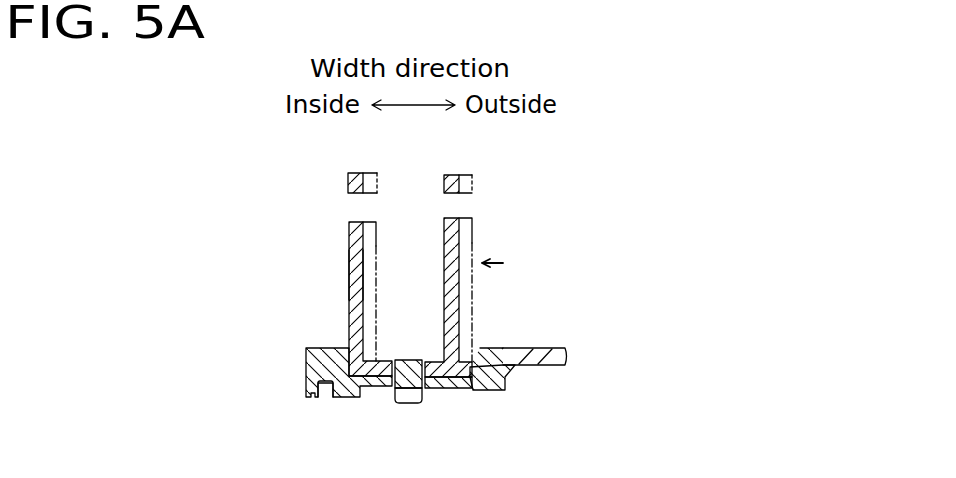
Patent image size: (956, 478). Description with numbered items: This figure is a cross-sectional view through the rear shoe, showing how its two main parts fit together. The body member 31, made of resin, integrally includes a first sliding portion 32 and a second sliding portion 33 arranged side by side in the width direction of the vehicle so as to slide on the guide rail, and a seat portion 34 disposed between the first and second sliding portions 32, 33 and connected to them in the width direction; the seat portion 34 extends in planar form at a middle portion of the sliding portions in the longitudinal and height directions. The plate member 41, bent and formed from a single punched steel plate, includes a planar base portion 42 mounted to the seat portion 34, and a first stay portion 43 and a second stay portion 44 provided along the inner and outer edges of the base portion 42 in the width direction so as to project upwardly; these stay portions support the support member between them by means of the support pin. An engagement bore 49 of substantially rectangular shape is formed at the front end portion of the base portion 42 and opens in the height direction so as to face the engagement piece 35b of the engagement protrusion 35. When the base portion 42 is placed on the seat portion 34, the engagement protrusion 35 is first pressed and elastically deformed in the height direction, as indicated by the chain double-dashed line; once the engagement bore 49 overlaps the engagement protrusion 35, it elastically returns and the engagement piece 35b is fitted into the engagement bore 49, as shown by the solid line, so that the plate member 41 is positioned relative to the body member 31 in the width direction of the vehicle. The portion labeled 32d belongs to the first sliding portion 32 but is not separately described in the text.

The plate member 41 is at (352, 236).
The second stay portion 44 is at (352, 268).
The base portion 42 is at (390, 359).
The first stay portion 43 is at (461, 233).
The engagement bore 49 is at (413, 360).
The engagement protrusion 35 is at (400, 432).
The engagement piece 35b is at (398, 406).
The body member 31 is at (330, 348).
The second sliding portion 33 is at (323, 398).
The seat portion 34 is at (452, 389).
The first sliding portion 32 is at (555, 393).
The flange 32d is at (566, 357).